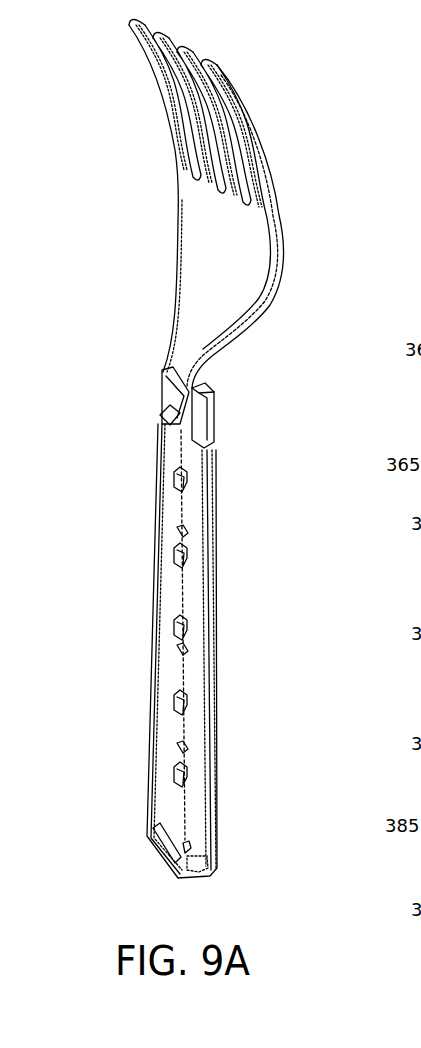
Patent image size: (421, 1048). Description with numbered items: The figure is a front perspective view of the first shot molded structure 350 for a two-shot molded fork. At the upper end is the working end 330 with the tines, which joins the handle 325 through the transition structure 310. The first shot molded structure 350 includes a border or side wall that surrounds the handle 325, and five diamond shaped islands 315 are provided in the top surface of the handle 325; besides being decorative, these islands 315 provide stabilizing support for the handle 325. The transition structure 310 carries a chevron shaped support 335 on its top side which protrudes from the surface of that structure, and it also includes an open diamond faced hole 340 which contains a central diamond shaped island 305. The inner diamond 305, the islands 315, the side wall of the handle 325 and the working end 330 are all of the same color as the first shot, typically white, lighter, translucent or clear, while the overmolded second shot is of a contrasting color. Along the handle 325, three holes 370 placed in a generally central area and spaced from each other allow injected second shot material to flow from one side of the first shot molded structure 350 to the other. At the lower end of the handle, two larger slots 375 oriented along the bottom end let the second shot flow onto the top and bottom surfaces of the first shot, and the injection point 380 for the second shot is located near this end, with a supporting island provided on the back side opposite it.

The first shot molded structure 350 is at (312, 220).
The working end 330 is at (237, 268).
The transition structure 310 is at (206, 639).
The chevron shaped support 335 is at (158, 383).
The central diamond shaped island 305 is at (177, 410).
The open diamond faced hole 340 is at (183, 393).
The handle 325 is at (262, 595).
The diamond shaped islands 315 is at (189, 480).
The holes 370 is at (180, 530).
The injection point 380 is at (188, 847).
The slots 375 is at (163, 838).